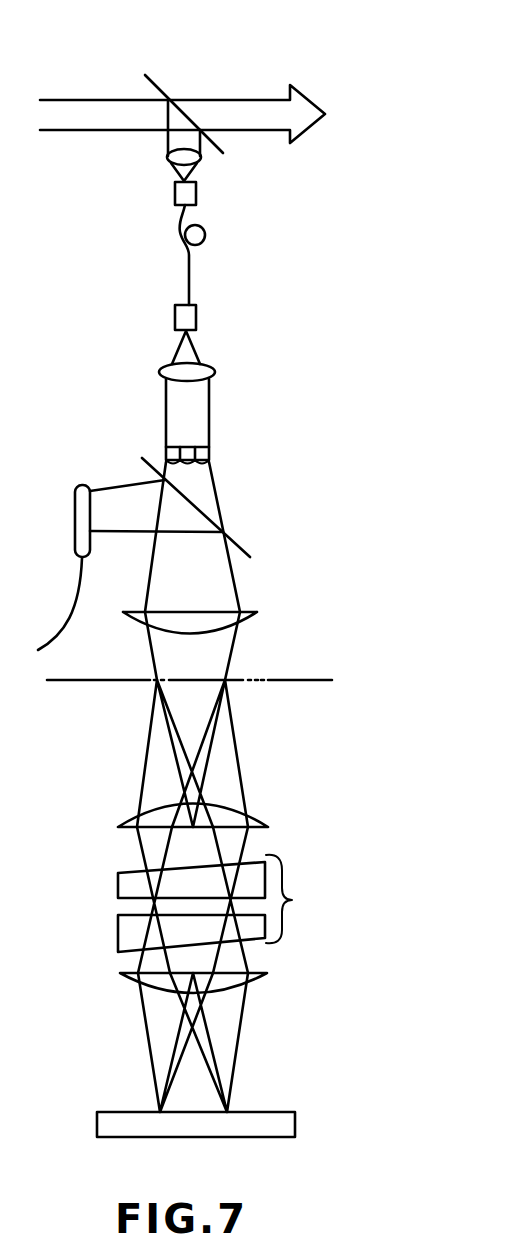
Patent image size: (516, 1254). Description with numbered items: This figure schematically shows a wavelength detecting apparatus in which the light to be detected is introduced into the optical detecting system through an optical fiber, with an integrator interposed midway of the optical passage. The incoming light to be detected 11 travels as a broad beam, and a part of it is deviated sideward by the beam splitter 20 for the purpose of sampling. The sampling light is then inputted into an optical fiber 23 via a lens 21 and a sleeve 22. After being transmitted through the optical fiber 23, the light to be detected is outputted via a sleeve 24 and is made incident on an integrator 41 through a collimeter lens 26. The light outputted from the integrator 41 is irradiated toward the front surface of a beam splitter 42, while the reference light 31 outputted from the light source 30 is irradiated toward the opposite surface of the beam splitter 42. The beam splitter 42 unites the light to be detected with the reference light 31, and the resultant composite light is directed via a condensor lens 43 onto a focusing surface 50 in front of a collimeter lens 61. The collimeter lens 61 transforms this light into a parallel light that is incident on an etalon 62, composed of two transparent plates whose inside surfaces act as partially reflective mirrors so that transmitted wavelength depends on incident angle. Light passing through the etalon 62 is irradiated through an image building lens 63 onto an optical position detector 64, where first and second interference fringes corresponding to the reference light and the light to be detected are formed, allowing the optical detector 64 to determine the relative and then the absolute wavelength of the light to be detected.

The laser beam 11 is at (62, 100).
The beam splitter 20 is at (158, 82).
The lens 21 is at (167, 159).
The sleeve 22 is at (198, 198).
The optical fiber 23 is at (190, 263).
The sleeve 24 is at (198, 318).
The collimeter lens 26 is at (213, 375).
The light source 30 is at (74, 500).
The reference light 31 is at (123, 482).
The integrator 41 is at (210, 452).
The beam splitter 42 is at (237, 543).
The condensor lens 43 is at (258, 612).
The focusing surface 50 is at (307, 681).
The collimeter lens 61 is at (260, 818).
The etalon 62 is at (223, 903).
The image building lens 63 is at (263, 975).
The optical position detector 64 is at (265, 1110).